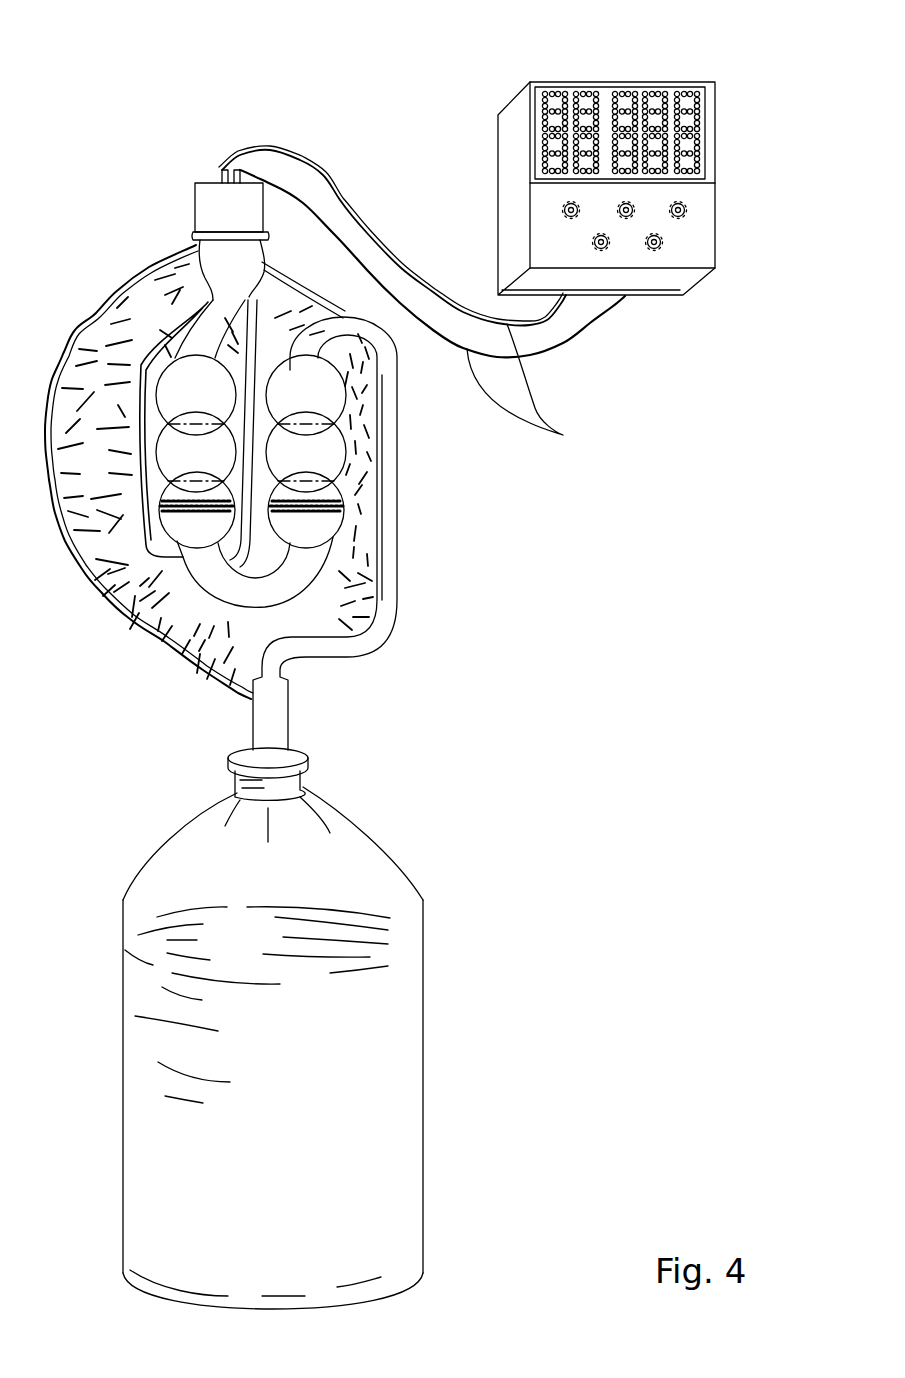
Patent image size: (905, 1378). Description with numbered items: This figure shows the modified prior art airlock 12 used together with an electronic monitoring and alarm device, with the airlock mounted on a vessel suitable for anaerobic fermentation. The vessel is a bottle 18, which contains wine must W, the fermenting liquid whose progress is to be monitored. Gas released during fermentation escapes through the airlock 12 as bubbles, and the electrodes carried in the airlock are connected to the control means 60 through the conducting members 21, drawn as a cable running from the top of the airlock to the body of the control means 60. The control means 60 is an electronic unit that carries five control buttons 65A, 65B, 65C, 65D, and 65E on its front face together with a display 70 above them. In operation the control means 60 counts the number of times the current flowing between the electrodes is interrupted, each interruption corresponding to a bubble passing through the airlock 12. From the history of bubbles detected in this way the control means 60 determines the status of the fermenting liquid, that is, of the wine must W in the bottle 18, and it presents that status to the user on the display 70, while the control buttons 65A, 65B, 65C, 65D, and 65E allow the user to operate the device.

The airlock assembly 12 is at (508, 518).
The bottle 18 is at (350, 1028).
The conducting members 21 is at (422, 294).
The control means 60 is at (628, 187).
The control button 65A is at (562, 211).
The control button 65B is at (687, 210).
The control button 65C is at (616, 212).
The control button 65D is at (601, 249).
The control button 65E is at (658, 248).
The display 70 is at (533, 92).
The wine must W is at (364, 1053).